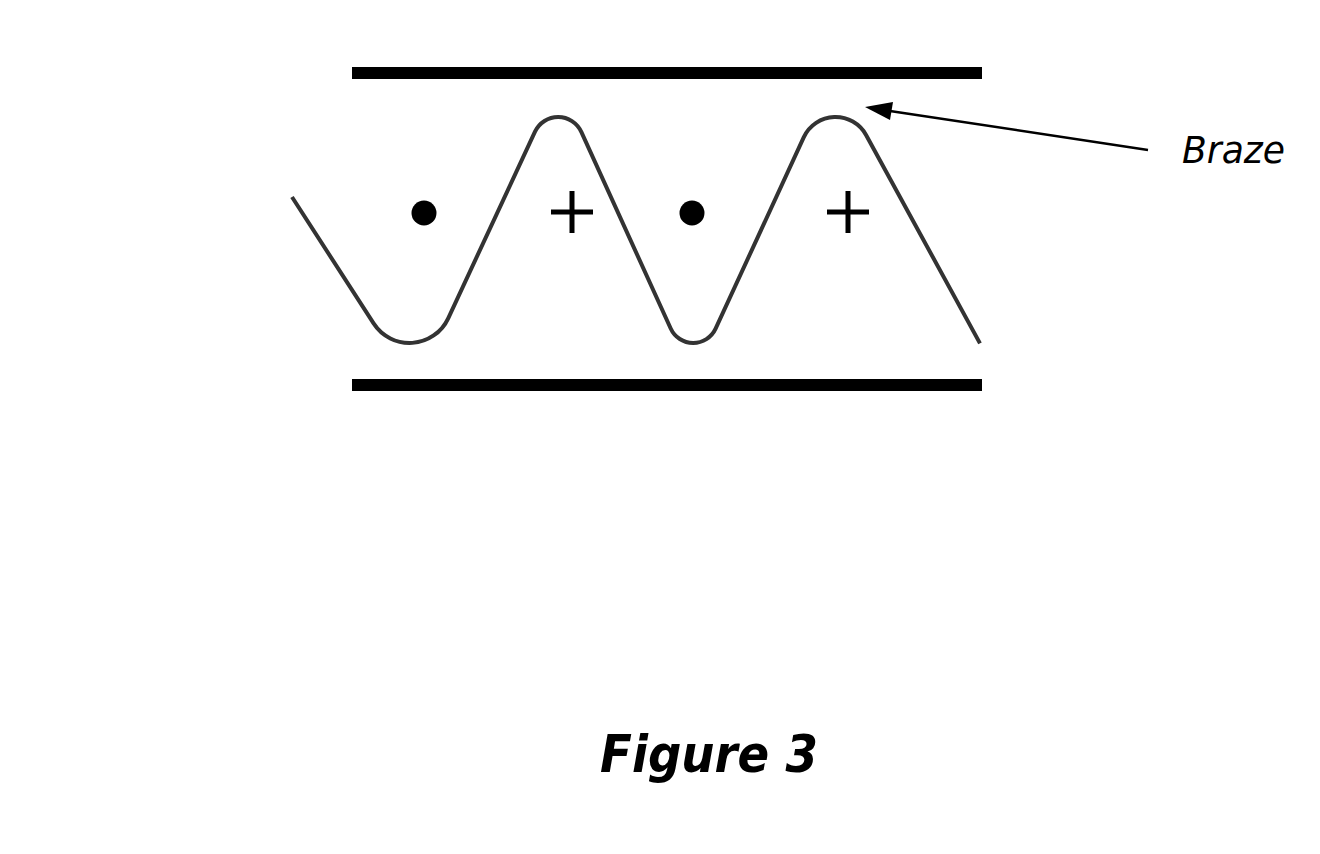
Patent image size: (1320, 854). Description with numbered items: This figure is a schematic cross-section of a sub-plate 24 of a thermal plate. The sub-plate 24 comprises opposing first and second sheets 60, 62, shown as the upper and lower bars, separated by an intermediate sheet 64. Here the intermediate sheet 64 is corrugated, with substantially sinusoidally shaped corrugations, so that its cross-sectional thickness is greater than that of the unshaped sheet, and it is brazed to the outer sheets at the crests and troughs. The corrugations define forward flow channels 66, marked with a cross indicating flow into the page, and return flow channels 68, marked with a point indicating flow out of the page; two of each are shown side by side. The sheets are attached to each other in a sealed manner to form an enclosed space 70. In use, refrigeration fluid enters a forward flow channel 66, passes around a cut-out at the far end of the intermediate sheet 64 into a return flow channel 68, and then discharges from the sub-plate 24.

The sub-plate 24 is at (190, 128).
The first sheet 60 is at (393, 67).
The second sheet 62 is at (547, 391).
The intermediate sheet 64 is at (320, 240).
The forward flow channel 66 is at (432, 160).
The return flow channel 68 is at (583, 290).
The enclosed space 70 is at (340, 155).